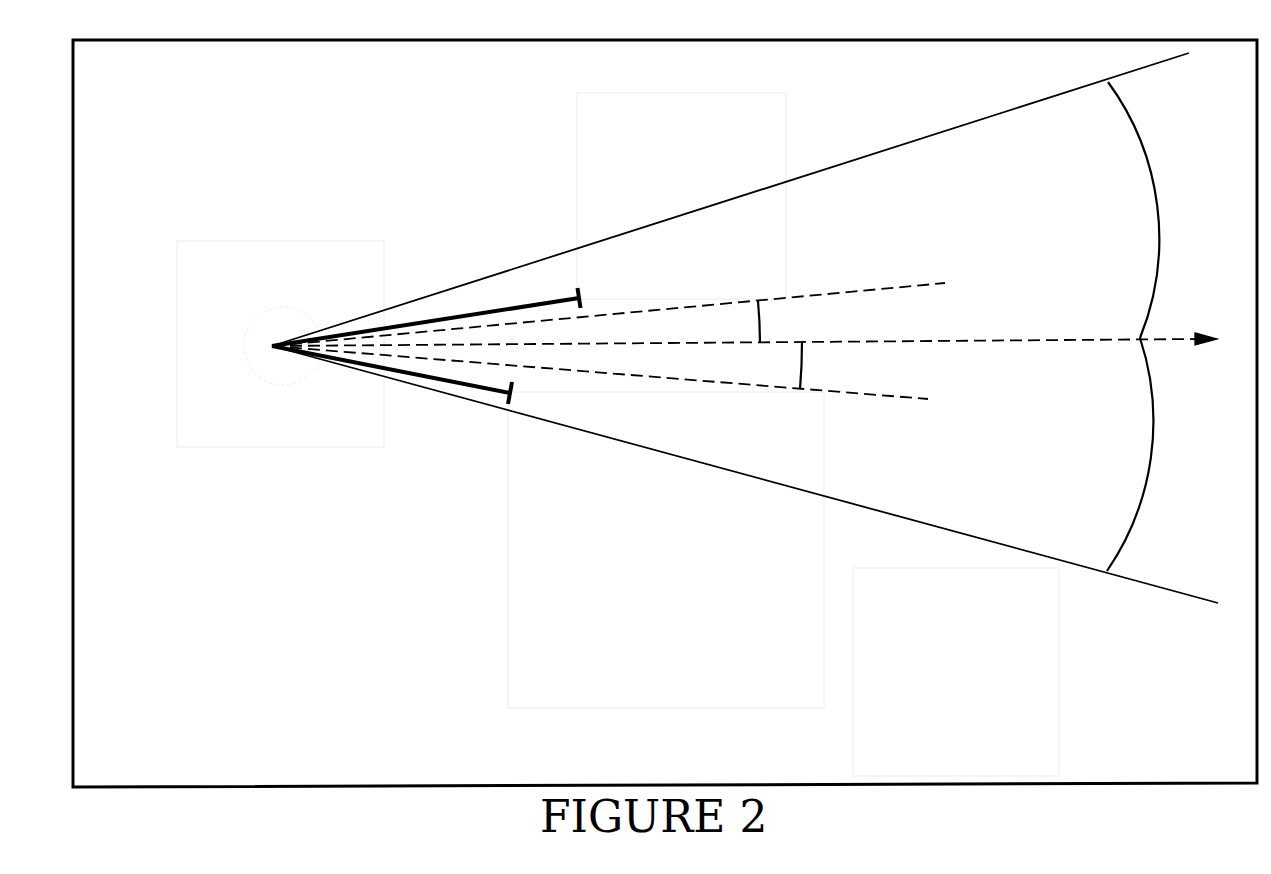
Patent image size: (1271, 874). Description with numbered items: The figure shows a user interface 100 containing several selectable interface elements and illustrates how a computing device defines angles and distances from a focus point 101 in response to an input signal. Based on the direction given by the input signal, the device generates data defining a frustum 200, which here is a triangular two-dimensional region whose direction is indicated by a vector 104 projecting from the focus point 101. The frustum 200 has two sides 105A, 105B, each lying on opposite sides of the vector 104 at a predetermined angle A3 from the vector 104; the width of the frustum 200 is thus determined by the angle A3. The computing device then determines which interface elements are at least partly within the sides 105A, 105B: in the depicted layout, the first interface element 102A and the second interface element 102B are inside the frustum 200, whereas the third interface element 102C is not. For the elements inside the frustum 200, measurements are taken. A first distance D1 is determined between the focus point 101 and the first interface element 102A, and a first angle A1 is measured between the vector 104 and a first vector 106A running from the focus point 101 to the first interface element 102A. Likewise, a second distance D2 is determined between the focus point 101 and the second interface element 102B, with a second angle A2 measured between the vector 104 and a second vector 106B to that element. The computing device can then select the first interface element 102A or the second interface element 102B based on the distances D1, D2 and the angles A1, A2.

The user interface 100 is at (178, 788).
The focus point 101 is at (248, 332).
The first interface element 102A is at (578, 238).
The second interface element 102B is at (512, 670).
The third interface element 102C is at (1058, 723).
The vector 104 is at (1070, 340).
The first side of frustum 105A is at (1072, 93).
The second side of frustum 105B is at (1053, 558).
The first vector 106A is at (892, 287).
The second vector 106B is at (904, 398).
The frustum 200 is at (745, 328).
The first distance D1 is at (537, 301).
The second distance D2 is at (480, 392).
The first angle A1 is at (781, 321).
The second angle A2 is at (823, 365).
The predetermined angle A3 is at (1151, 326).